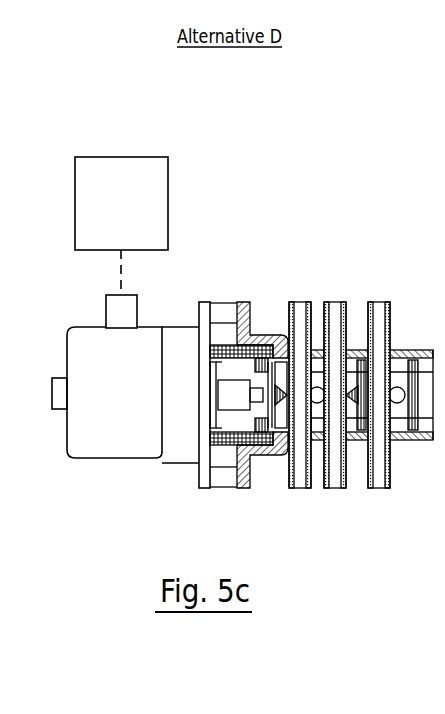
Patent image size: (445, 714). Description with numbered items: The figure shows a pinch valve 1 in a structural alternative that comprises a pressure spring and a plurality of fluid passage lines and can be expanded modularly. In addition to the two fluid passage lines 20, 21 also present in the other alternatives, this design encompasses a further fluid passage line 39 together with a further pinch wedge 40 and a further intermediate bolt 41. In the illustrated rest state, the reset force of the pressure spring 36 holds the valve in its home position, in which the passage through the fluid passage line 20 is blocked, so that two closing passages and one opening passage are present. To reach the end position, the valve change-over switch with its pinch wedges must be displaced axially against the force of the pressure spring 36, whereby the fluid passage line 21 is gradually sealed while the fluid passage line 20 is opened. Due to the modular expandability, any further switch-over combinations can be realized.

The pinch valve 1 is at (152, 473).
The pressure spring 36 is at (230, 345).
The fluid passage line 21 is at (294, 480).
The fluid passage line 20 is at (336, 480).
The further fluid passage line 39 is at (380, 480).
The further pinch wedge 40 is at (358, 393).
The further intermediate bolt 41 is at (398, 388).